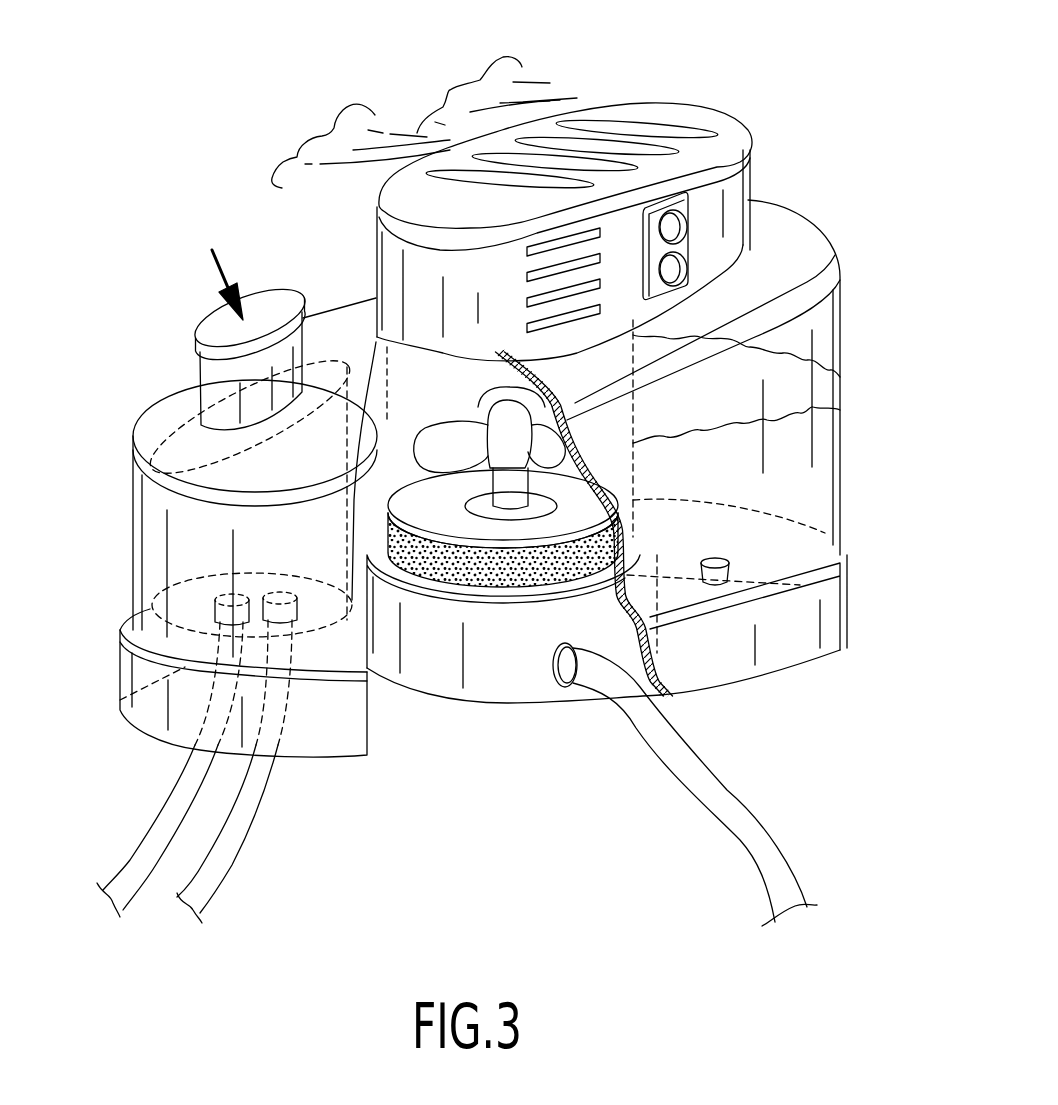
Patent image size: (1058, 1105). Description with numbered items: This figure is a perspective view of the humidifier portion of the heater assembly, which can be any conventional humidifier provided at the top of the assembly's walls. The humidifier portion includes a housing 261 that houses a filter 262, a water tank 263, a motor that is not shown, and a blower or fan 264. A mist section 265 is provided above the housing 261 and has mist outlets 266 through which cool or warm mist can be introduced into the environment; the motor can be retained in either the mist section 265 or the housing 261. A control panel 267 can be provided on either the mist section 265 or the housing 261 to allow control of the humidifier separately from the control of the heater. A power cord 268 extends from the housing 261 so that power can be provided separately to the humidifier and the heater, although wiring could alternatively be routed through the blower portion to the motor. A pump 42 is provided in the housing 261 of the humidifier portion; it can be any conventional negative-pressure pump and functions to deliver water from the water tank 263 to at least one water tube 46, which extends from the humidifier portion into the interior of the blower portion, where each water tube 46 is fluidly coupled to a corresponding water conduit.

The pump 42 is at (210, 383).
The water tube 46 is at (133, 862).
The housing 261 is at (842, 322).
The filter 262 is at (497, 565).
The water tank 263 is at (780, 443).
The blower or fan 264 is at (455, 442).
The mist section 265 is at (752, 152).
The mist outlets 266 is at (647, 130).
The control panel 267 is at (706, 236).
The power cord 268 is at (728, 794).